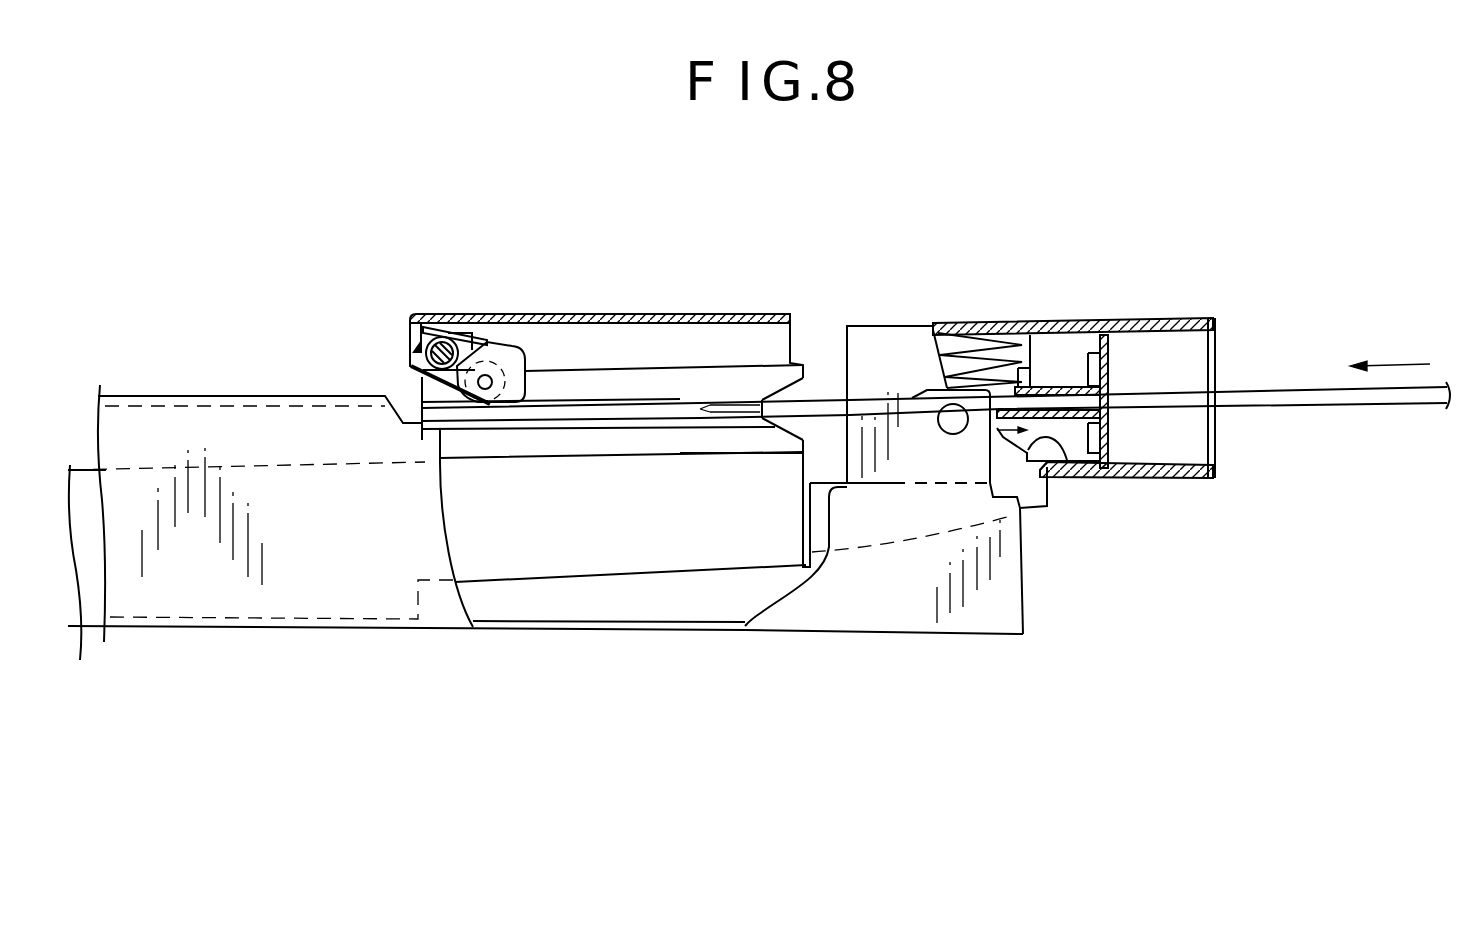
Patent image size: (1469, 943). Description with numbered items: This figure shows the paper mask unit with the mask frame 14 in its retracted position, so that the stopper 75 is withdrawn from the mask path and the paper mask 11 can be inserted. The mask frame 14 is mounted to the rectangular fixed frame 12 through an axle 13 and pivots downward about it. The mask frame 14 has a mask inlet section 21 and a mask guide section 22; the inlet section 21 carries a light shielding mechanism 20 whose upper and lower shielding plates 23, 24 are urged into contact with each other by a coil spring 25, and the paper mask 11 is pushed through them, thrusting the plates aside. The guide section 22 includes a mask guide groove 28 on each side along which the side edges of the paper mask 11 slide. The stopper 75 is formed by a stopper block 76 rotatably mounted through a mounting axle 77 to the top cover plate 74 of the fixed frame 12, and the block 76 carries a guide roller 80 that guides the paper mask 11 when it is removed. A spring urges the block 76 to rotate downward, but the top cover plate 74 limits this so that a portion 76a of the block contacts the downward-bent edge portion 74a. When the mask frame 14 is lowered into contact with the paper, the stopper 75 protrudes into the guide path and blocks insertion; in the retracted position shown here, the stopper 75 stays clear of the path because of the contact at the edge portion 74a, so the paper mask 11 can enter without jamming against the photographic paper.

The paper mask 11 is at (1240, 385).
The fixed frame 12 is at (862, 628).
The axle 13 is at (943, 405).
The mask frame 14 is at (570, 563).
The light shielding mechanism 20 is at (1043, 360).
The mask inlet section 21 is at (1100, 322).
The mask guide section 22 is at (712, 378).
The upper shielding plate 23 is at (1107, 382).
The lower shielding plate 24 is at (1107, 413).
The coil spring 25 is at (957, 353).
The mask guide groove 28 is at (630, 413).
The top cover plate 74 is at (633, 314).
The edge portion 74a is at (410, 323).
The stopper 75 is at (500, 328).
The stopper block 76 is at (513, 348).
The portion of the stopper block 76a is at (410, 362).
The mounting axle 77 is at (441, 337).
The guide roller 80 is at (420, 400).